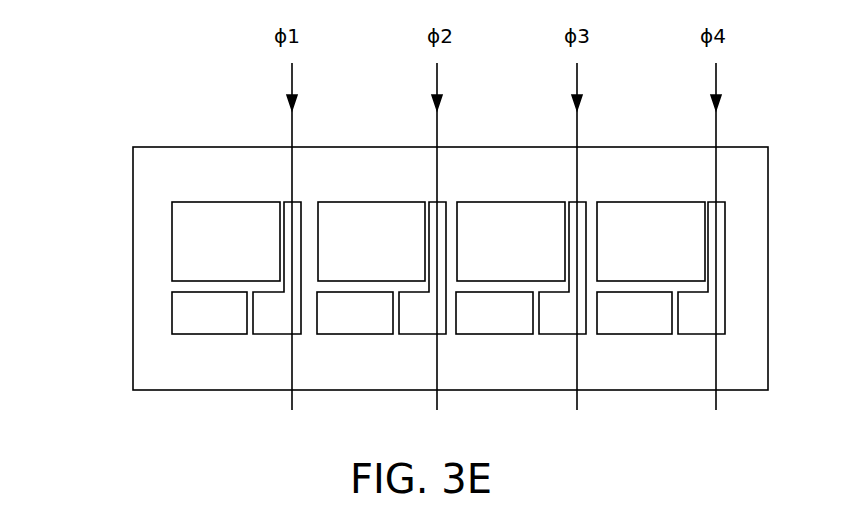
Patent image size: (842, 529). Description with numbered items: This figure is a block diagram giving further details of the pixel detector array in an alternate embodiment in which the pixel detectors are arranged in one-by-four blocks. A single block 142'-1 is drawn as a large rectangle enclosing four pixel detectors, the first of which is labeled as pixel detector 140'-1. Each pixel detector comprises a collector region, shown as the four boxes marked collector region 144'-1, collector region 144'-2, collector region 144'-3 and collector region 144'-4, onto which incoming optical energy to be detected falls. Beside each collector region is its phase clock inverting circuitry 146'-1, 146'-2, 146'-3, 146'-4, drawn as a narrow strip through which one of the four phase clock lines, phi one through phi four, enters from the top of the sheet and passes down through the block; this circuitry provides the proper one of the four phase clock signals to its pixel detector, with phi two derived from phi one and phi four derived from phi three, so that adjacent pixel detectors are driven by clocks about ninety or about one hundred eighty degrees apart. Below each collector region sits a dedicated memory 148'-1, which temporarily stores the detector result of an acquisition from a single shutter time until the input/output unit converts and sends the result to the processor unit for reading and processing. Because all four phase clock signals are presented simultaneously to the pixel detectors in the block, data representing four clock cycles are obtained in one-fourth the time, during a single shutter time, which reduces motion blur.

The block 142'-1 is at (398, 227).
The pixel detector 140'-1 is at (161, 238).
The collector region 144'-1 is at (226, 241).
The collector region 144'-2 is at (371, 241).
The collector region 144'-3 is at (511, 241).
The collector region 144'-4 is at (651, 241).
The phase clock inverting circuitry 146'-1 is at (250, 246).
The phase clock inverting circuitry 146'-2 is at (396, 246).
The phase clock inverting circuitry 146'-3 is at (536, 246).
The phase clock inverting circuitry 146'-4 is at (675, 246).
The dedicated memory 148'-1 is at (407, 331).